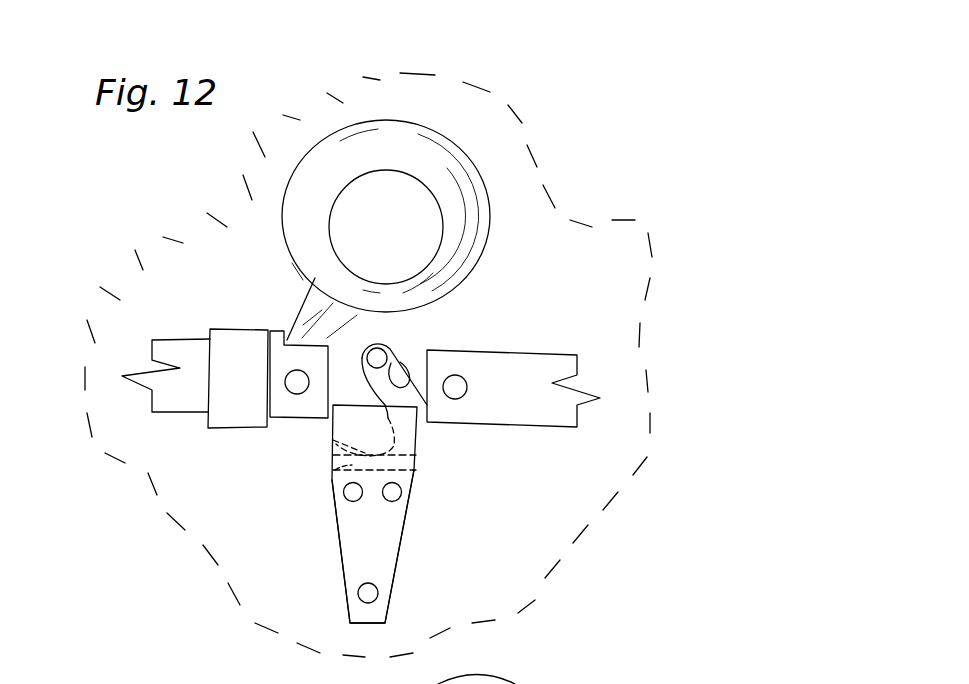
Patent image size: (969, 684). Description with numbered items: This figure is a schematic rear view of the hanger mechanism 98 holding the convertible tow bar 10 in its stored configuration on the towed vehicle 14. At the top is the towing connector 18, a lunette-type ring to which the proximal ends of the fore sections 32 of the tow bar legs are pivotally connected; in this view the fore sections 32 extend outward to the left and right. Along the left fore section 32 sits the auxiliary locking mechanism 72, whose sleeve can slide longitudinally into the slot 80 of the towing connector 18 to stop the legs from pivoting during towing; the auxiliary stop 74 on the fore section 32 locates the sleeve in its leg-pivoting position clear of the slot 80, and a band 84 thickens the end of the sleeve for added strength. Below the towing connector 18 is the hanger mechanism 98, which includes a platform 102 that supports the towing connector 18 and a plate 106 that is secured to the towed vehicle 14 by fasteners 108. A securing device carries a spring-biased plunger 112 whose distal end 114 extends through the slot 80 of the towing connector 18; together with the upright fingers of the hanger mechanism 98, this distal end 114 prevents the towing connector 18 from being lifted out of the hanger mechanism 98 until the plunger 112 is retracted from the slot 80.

The convertible tow bar 10 is at (555, 163).
The towed vehicle 14 is at (637, 269).
The towing connector 18 is at (452, 152).
The fore section 32 is at (287, 406).
The auxiliary locking mechanism 72 is at (165, 414).
The auxiliary stop 74 is at (283, 343).
The slot 80 is at (400, 361).
The bands 84 is at (222, 328).
The hanger mechanism 98 is at (412, 454).
The platform 102 is at (336, 478).
The plate 106 is at (390, 546).
The fasteners 108 is at (358, 595).
The spring-biased plunger 112 is at (333, 440).
The distal end 114 is at (380, 357).